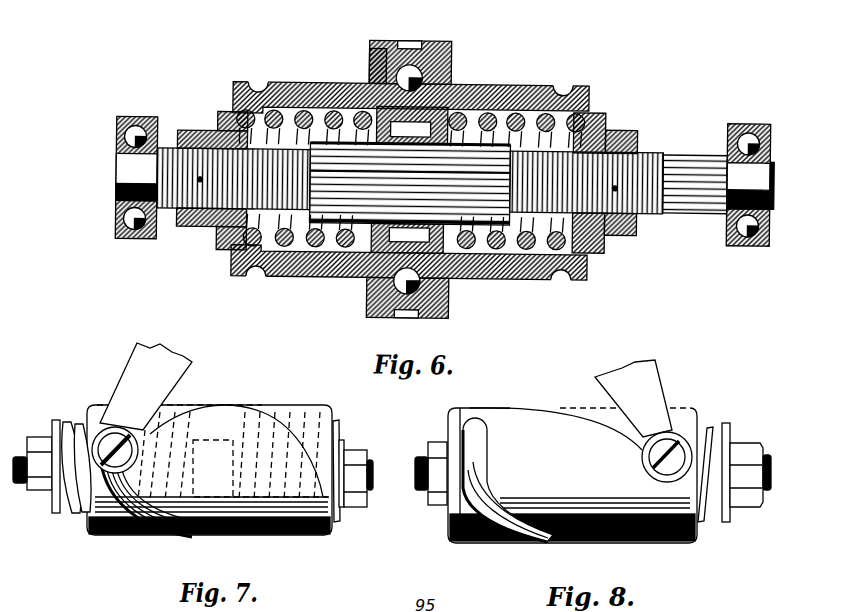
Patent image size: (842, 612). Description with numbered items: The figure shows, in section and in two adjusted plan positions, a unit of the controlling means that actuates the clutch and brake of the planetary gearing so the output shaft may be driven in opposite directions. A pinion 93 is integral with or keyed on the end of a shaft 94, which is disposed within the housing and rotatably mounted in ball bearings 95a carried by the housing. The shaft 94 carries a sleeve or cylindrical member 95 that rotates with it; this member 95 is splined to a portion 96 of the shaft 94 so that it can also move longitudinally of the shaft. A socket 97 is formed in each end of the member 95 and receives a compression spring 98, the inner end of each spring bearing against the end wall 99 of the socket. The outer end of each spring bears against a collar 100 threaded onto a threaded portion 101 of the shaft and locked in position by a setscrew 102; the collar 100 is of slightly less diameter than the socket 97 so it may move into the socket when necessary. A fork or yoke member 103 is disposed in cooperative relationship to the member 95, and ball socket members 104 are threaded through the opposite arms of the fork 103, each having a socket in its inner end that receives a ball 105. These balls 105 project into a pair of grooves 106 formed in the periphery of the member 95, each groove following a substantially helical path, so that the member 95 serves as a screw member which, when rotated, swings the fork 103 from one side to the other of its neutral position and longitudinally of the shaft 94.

In FIG. 6, the pinion 93 is at (695, 156).
In FIG. 6, the shaft 94 is at (761, 182).
In FIG. 7, the shaft 94 is at (364, 492).
In FIG. 8, the shaft 94 is at (765, 492).
In FIG. 6, the sleeve or cylindrical member 95 is at (507, 86).
In FIG. 7, the sleeve or cylindrical member 95 is at (212, 425).
In FIG. 8, the sleeve or cylindrical member 95 is at (557, 417).
In FIG. 6, the ball bearings 95a is at (128, 138).
In FIG. 6, the splined portion of the shaft 96 is at (466, 172).
In FIG. 6, the socket 97 is at (317, 112).
In FIG. 7, the socket 97 is at (172, 437).
In FIG. 6, the compression spring 98 is at (274, 112).
In FIG. 7, the compression spring 98 is at (68, 420).
In FIG. 8, the compression spring 98 is at (710, 428).
In FIG. 6, the end wall of the socket 99 is at (410, 180).
In FIG. 7, the end wall of the socket 99 is at (216, 440).
In FIG. 6, the collar 100 is at (223, 113).
In FIG. 7, the collar 100 is at (56, 430).
In FIG. 8, the collar 100 is at (733, 438).
In FIG. 6, the threaded portion of the shaft 101 is at (196, 134).
In FIG. 6, the setscrew 102 is at (200, 182).
In FIG. 6, the fork or yoke member 103 is at (452, 54).
In FIG. 7, the fork or yoke member 103 is at (128, 393).
In FIG. 8, the fork or yoke member 103 is at (647, 393).
In FIG. 6, the ball socket member 104 is at (392, 46).
In FIG. 6, the ball 105 is at (377, 67).
In FIG. 6, the groove 106 is at (560, 96).
In FIG. 7, the groove 106 is at (277, 420).
In FIG. 8, the groove 106 is at (478, 470).